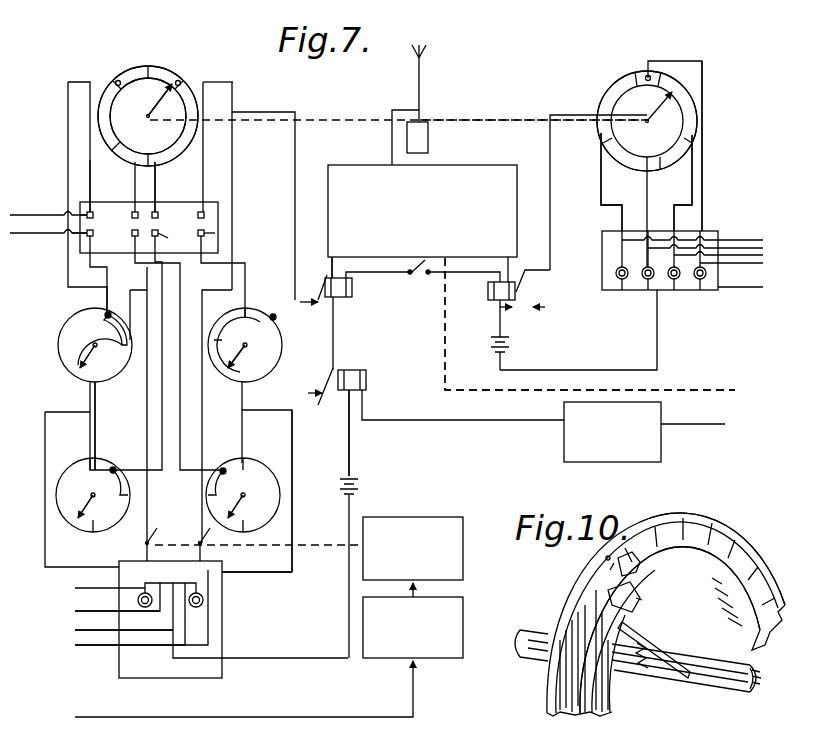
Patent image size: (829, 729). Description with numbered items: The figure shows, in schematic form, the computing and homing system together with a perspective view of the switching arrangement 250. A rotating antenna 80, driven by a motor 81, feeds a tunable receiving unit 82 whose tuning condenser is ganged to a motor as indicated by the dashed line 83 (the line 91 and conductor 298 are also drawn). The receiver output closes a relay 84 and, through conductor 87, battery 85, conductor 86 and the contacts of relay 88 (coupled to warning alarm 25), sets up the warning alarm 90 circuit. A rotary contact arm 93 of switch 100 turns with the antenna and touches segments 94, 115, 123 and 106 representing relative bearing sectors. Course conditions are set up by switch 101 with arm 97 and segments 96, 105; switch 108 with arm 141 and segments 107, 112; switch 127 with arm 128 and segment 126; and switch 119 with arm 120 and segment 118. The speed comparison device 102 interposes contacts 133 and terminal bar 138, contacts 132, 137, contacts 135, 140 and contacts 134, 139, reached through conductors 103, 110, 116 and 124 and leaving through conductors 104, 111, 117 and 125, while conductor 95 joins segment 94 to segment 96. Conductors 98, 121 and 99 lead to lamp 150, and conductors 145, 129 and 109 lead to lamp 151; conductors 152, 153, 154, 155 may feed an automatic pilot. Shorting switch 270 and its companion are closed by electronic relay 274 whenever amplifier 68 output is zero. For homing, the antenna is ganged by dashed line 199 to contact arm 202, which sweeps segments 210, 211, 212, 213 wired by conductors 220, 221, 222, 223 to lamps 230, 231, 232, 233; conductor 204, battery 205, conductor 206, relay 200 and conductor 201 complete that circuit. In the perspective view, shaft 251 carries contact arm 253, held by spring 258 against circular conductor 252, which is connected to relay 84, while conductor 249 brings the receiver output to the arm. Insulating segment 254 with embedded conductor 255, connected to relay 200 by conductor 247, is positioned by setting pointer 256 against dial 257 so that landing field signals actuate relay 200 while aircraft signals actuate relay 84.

In FIG. 7, the switch 100 is at (165, 67).
In FIG. 7, the segment 106 is at (120, 80).
In FIG. 7, the rotary contact arm 93 is at (153, 80).
In FIG. 7, the segment 94 is at (182, 82).
In FIG. 7, the segment 123 is at (105, 133).
In FIG. 7, the segment 115 is at (190, 128).
In FIG. 7, the conductor 103 is at (215, 148).
In FIG. 7, the conductor 145 is at (68, 168).
In FIG. 7, the conductor 110 is at (90, 170).
In FIG. 7, the conductor 116 is at (156, 166).
In FIG. 7, the conductor 124 is at (135, 190).
In FIG. 7, the contact 135 is at (156, 205).
In FIG. 7, the contact 133 is at (203, 205).
In FIG. 7, the conductor 95 is at (233, 175).
In FIG. 7, the conductor 86 is at (273, 100).
In FIG. 7, the speed comparison device 102 is at (219, 216).
In FIG. 7, the contact 132 is at (68, 200).
In FIG. 7, the contact 134 is at (132, 215).
In FIG. 7, the contact 139 is at (133, 235).
In FIG. 7, the contact 140 is at (175, 238).
In FIG. 7, the terminal bar 138 is at (215, 233).
In FIG. 7, the contact 137 is at (85, 238).
In FIG. 7, the conductor 111 is at (110, 282).
In FIG. 7, the conductor 125 is at (140, 272).
In FIG. 7, the conductor 117 is at (180, 290).
In FIG. 7, the conductor 104 is at (245, 268).
In FIG. 7, the rotary contact arm 97 is at (213, 405).
In FIG. 7, the switch 108 is at (52, 345).
In FIG. 7, the segment 112 is at (100, 312).
In FIG. 7, the rotary contact arm 141 is at (75, 345).
In FIG. 7, the segment 107 is at (95, 405).
In FIG. 7, the switch 101 is at (283, 345).
In FIG. 7, the segment 105 is at (250, 315).
In FIG. 7, the segment 96 is at (230, 372).
In FIG. 7, the conductor 98 is at (250, 385).
In FIG. 7, the conductor 121 is at (243, 432).
In FIG. 7, the conductor 99 is at (292, 465).
In FIG. 7, the conductor 109 is at (45, 470).
In FIG. 7, the switch 127 is at (72, 463).
In FIG. 7, the conductor 129 is at (90, 445).
In FIG. 7, the segment 126 is at (114, 468).
In FIG. 7, the rotary contact arm 128 is at (93, 520).
In FIG. 7, the switch 119 is at (258, 462).
In FIG. 7, the segment 118 is at (224, 468).
In FIG. 7, the rotary contact arm 120 is at (255, 520).
In FIG. 7, the shorting switch 270 is at (152, 525).
In FIG. 7, the conductive segment 211 is at (208, 540).
In FIG. 7, the warning alarm 90 is at (211, 619).
In FIG. 7, the lamp 151 is at (138, 600).
In FIG. 7, the lamp 150 is at (203, 600).
In FIG. 7, the conductor 152 is at (78, 586).
In FIG. 7, the conductor 153 is at (78, 608).
In FIG. 7, the conductor 154 is at (78, 627).
In FIG. 7, the conductor 155 is at (78, 643).
In FIG. 7, the rotating antenna 80 is at (428, 52).
In FIG. 7, the motor 81 is at (448, 140).
In FIG. 7, the mechanical connection 91 is at (340, 117).
In FIG. 7, the dashed line 199 is at (475, 118).
In FIG. 7, the receiving unit 82 is at (422, 211).
In FIG. 7, the relay 84 is at (338, 300).
In FIG. 7, the conductor 298 is at (362, 283).
In FIG. 7, the conductor 249 is at (412, 265).
In FIG. 7, the conductor 247 is at (460, 272).
In FIG. 7, the switching arrangement 250 is at (420, 285).
In FIG. 10, the switching arrangement 250 is at (575, 612).
In FIG. 7, the relay 200 is at (490, 296).
In FIG. 7, the conductor 206 is at (512, 322).
In FIG. 7, the battery 205 is at (510, 345).
In FIG. 7, the conductor 201 is at (552, 155).
In FIG. 7, the relay 88 is at (366, 380).
In FIG. 7, the conductor 87 is at (355, 443).
In FIG. 7, the battery 85 is at (358, 488).
In FIG. 7, the dashed line 83 is at (520, 392).
In FIG. 7, the electronic relay 274 is at (413, 557).
In FIG. 7, the amplifier 68 is at (269, 657).
In FIG. 7, the warning alarm 25 is at (644, 432).
In FIG. 7, the rotating contact arm 202 is at (640, 112).
In FIG. 7, the conductive segment 210 is at (652, 76).
In FIG. 7, the conductive segment 212 is at (600, 96).
In FIG. 7, the conductor 220 is at (702, 160).
In FIG. 7, the conductor 221 is at (702, 185).
In FIG. 7, the conductor 222 is at (591, 182).
In FIG. 7, the conductive segment 213 is at (662, 219).
In FIG. 7, the conductor 223 is at (660, 208).
In FIG. 7, the lamp 230 is at (706, 280).
In FIG. 7, the lamp 232 is at (616, 275).
In FIG. 7, the lamp 233 is at (644, 280).
In FIG. 7, the lamp 231 is at (680, 280).
In FIG. 7, the conductor 204 is at (657, 352).
In FIG. 10, the circular conductor 252 is at (745, 590).
In FIG. 10, the dial 257 is at (690, 520).
In FIG. 10, the conductor 255 is at (660, 590).
In FIG. 10, the pointer 256 is at (606, 556).
In FIG. 10, the insulating segment 254 is at (640, 600).
In FIG. 10, the contact arm 253 is at (655, 640).
In FIG. 10, the spring 258 is at (645, 675).
In FIG. 10, the shaft 251 is at (722, 700).